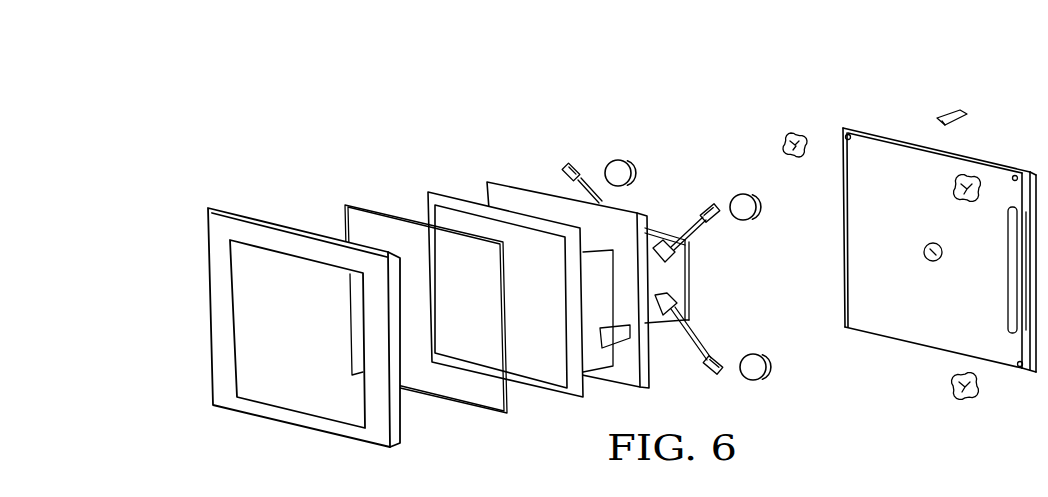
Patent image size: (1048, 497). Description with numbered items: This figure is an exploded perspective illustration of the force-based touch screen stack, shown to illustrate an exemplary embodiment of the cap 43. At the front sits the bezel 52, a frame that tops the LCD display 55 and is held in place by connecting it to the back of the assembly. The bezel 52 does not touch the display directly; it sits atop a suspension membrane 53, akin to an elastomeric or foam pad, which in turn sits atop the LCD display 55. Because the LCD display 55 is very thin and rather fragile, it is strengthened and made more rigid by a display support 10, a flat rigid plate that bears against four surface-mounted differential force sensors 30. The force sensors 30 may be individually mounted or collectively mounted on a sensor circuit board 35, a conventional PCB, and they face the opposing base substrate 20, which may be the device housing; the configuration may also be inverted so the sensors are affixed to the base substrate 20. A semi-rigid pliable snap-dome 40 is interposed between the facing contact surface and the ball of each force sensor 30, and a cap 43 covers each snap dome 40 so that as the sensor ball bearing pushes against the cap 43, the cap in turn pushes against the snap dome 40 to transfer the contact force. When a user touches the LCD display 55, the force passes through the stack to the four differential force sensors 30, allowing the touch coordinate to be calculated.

The display support 10 is at (490, 183).
The base substrate 20 is at (872, 128).
The force sensors 30 is at (707, 203).
The sensor circuit board 35 is at (662, 325).
The snap-dome 40 is at (795, 138).
The cap 43 is at (737, 197).
The bezel 52 is at (240, 228).
The suspension membrane 53 is at (345, 205).
The LCD display 55 is at (428, 192).